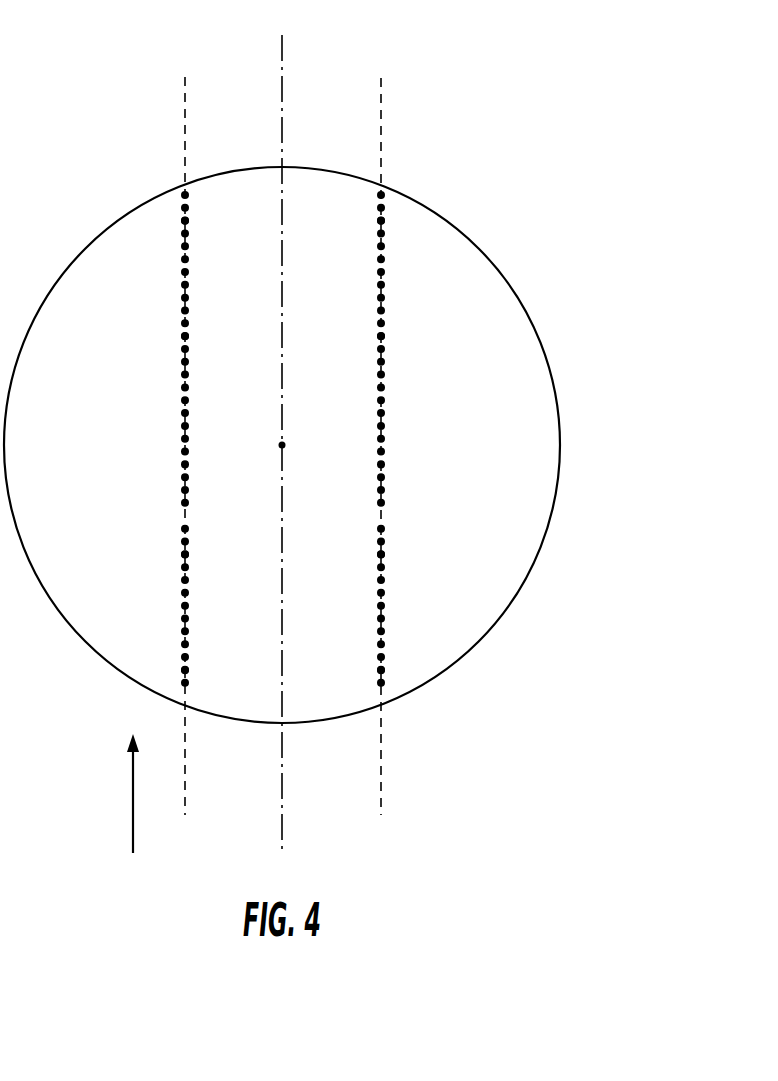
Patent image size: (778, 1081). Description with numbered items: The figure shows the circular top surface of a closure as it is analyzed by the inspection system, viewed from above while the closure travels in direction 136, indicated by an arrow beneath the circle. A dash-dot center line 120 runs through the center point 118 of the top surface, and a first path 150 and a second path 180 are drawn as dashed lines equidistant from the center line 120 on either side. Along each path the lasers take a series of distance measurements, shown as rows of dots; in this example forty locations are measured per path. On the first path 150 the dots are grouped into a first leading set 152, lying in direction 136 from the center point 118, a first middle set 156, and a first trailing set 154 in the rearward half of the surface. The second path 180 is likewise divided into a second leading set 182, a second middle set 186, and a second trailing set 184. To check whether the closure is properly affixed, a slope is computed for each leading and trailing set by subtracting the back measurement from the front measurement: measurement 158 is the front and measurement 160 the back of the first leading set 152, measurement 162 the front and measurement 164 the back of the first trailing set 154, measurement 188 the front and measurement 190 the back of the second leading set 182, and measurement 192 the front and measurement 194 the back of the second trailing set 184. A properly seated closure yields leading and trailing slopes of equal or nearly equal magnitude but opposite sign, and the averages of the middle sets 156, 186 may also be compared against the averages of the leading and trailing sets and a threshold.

The center point 118 is at (284, 445).
The center line 120 is at (282, 60).
The direction 136 is at (131, 808).
The first path 150 is at (184, 128).
The first leading set 152 is at (180, 215).
The first trailing set 154 is at (180, 552).
The first middle set 156 is at (180, 382).
The front measurement of first leading set 158 is at (186, 220).
The back measurement of first leading set 160 is at (186, 336).
The front measurement of first trailing set 162 is at (186, 554).
The back measurement of first trailing set 164 is at (186, 671).
The second path 180 is at (381, 128).
The second leading set 182 is at (386, 215).
The second trailing set 184 is at (386, 552).
The second middle set 186 is at (386, 382).
The front measurement of second leading set 188 is at (380, 220).
The back measurement of second leading set 190 is at (380, 336).
The front measurement of second trailing set 192 is at (380, 554).
The back measurement of second trailing set 194 is at (380, 671).